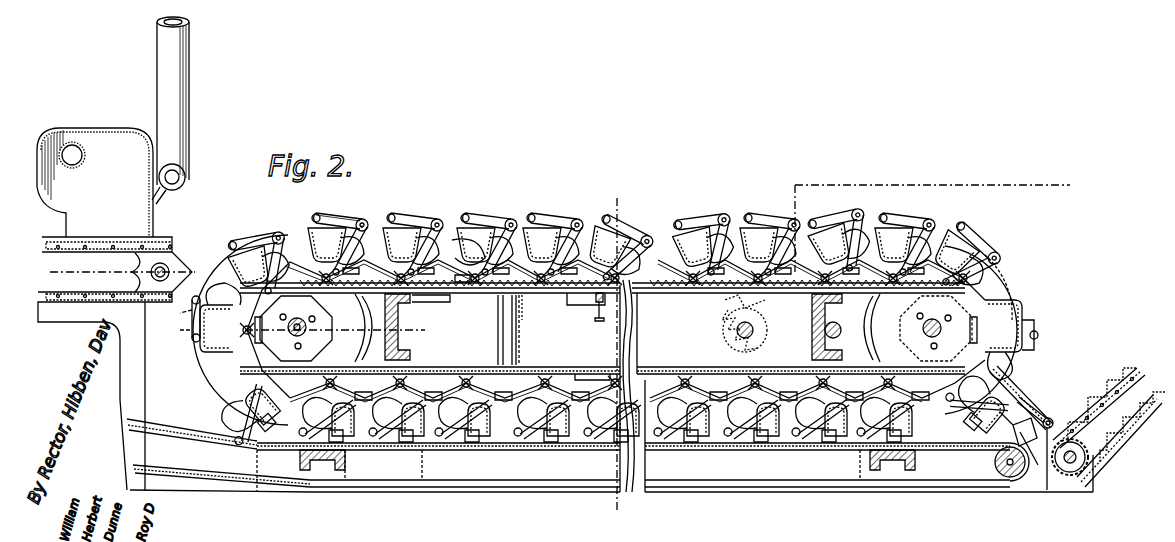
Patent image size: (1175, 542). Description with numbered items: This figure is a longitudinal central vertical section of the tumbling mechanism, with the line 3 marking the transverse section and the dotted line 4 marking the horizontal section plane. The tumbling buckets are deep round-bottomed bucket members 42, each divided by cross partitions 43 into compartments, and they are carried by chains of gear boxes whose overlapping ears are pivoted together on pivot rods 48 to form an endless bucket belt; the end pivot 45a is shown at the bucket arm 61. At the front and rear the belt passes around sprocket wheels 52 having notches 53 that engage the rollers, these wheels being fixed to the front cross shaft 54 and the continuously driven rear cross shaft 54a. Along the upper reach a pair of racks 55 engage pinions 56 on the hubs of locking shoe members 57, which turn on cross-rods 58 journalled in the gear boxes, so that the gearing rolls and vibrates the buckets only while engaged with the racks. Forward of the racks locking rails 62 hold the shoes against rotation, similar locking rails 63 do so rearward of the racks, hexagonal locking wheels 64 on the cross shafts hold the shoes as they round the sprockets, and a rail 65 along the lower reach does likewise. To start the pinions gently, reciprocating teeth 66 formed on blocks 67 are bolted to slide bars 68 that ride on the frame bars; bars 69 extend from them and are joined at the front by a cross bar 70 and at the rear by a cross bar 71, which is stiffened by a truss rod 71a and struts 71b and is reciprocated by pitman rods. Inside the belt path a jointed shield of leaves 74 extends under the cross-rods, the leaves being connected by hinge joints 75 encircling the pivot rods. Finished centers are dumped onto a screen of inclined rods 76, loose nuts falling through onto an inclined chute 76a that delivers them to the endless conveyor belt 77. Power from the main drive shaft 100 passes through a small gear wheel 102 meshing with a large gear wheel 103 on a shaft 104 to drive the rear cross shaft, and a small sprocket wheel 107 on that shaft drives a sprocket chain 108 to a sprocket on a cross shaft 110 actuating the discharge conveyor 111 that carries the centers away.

The section line 3- 3 is at (610, 207).
The section line 4- 4 is at (76, 253).
The bucket member 42 is at (238, 262).
The cross partitions 43 is at (480, 232).
The cup pivot arm 45a is at (895, 236).
The pivot rods 48 is at (505, 235).
The sprocket wheels 52 is at (410, 352).
The notches 53 is at (360, 302).
The cross shaft 54 is at (335, 328).
The rear cross shaft 54a is at (938, 328).
The racks 55 is at (710, 284).
The pinions 56 is at (474, 282).
The locking shoe members 57 is at (490, 348).
The cross-rods 58 is at (690, 285).
The cup arm 61 is at (350, 226).
The locking rails 62 is at (395, 290).
The locking rails 63 is at (875, 290).
The hexagonal locking wheels 64 is at (310, 333).
The rail 65 is at (590, 352).
The reciprocating teeth 66 is at (500, 300).
The blocks 67 is at (515, 300).
The slide bars 68 is at (522, 300).
The bars 69 is at (548, 290).
The cross bar 70 is at (438, 300).
The cross bar 71 is at (597, 302).
The truss rod 71a is at (600, 322).
The struts 71b is at (630, 326).
The leaves 74 is at (520, 300).
The hinge joints 75 is at (462, 285).
The inclined rods 76 is at (1038, 415).
The inclined chute 76a is at (1052, 488).
The endless conveyor belt 77 is at (666, 388).
The main drive shaft 100 is at (760, 330).
The small gear wheel 102 is at (722, 322).
The large gear wheel 103 is at (760, 300).
The shaft 104 is at (838, 330).
The small sprocket wheel 107 is at (1012, 290).
The sprocket chain 108 is at (1025, 395).
The cross shaft 110 is at (1082, 445).
The discharge conveyor 111 is at (1118, 378).